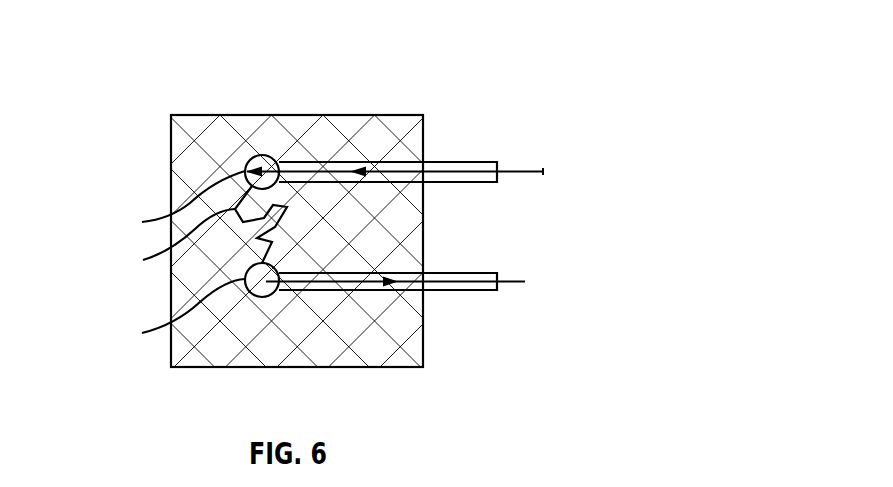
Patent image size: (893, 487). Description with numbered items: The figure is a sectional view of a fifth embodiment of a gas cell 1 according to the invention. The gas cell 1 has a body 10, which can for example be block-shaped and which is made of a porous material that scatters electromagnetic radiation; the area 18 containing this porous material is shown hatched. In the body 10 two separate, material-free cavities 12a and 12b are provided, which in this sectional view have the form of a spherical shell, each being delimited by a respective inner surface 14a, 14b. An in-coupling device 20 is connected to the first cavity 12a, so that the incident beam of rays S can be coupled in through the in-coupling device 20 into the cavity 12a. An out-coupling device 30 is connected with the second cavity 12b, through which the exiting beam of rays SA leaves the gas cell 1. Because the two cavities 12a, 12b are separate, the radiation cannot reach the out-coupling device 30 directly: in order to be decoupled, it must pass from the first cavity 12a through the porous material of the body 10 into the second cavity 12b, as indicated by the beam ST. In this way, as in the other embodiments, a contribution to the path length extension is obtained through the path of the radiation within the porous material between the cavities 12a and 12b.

The gas cell 1 is at (156, 84).
The body 10 is at (395, 128).
The area containing the porous material 18 is at (190, 158).
The first cavity 12a is at (260, 160).
The second cavity 12b is at (262, 291).
The inner surface 14a is at (170, 204).
The inner surface 14b is at (170, 313).
The in-coupling device 20 is at (483, 160).
The out-coupling device 30 is at (472, 292).
The incident beam of rays S is at (537, 168).
The exiting beam of rays SA is at (517, 282).
The beam passing through the porous material ST is at (192, 232).